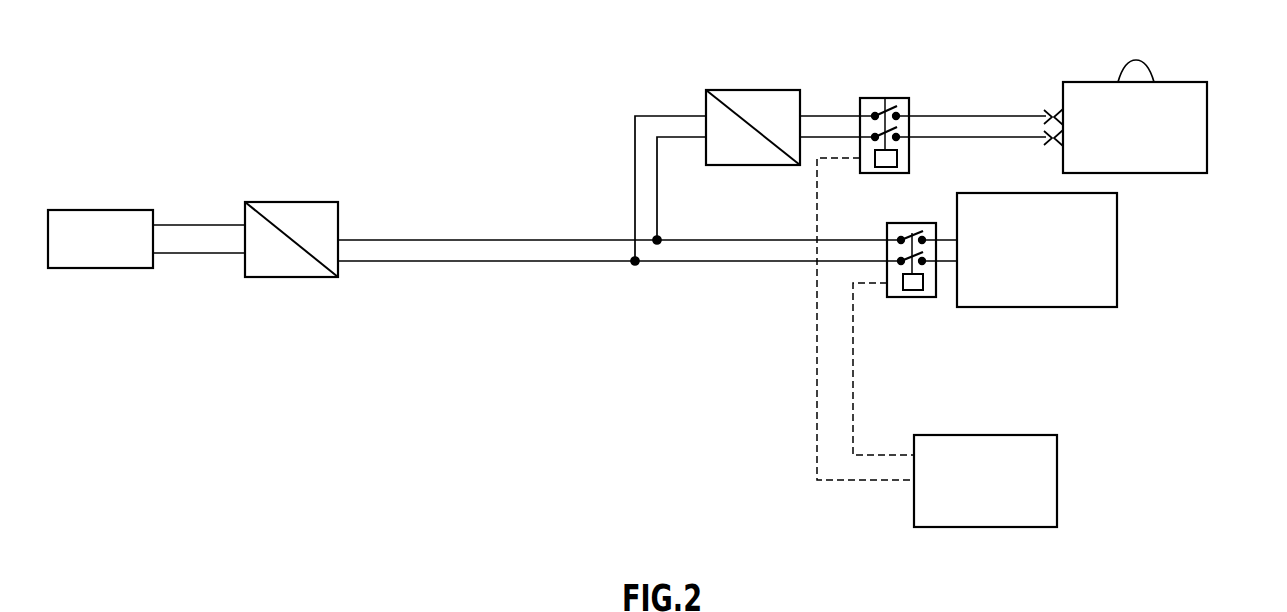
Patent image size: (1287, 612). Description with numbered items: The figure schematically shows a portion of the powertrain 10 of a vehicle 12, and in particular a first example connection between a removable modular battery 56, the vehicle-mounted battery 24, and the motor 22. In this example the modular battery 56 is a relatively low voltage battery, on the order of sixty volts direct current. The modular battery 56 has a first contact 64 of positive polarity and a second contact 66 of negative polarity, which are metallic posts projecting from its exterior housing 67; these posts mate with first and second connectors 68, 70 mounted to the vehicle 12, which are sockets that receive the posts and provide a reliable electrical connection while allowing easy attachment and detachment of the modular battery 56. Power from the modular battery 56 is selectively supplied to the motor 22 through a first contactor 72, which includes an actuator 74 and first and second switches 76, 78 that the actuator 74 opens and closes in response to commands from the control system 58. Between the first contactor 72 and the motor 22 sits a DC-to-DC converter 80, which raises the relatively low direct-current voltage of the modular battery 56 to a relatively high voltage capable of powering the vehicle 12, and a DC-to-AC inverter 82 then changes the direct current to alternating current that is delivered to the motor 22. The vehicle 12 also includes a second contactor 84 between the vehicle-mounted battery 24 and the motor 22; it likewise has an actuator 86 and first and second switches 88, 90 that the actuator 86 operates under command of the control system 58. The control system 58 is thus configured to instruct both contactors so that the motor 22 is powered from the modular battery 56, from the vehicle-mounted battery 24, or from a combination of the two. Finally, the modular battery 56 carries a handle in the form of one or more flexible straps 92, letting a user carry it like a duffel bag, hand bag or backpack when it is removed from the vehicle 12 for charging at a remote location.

The powertrain 10 is at (313, 393).
The vehicle 12 is at (540, 127).
The motor 22 is at (118, 210).
The vehicle-mounted battery 24 is at (1117, 250).
The modular battery 56 is at (1133, 119).
The control system 58 is at (1057, 467).
The first contact 64 is at (1058, 108).
The second contact 66 is at (1059, 147).
The exterior housing 67 is at (1167, 173).
The first connector 68 is at (1045, 110).
The second connector 70 is at (1045, 143).
The first contactor 72 is at (882, 122).
The actuator 74 is at (890, 166).
The first switch 76 is at (882, 100).
The second switch 78 is at (875, 131).
The DC-to-DC converter 80 is at (748, 90).
The DC-to-AC inverter 82 is at (310, 202).
The second contactor 84 is at (899, 280).
The actuator 86 is at (922, 298).
The first switch 88 is at (908, 233).
The second switch 90 is at (902, 255).
The flexible straps 92 is at (1138, 60).